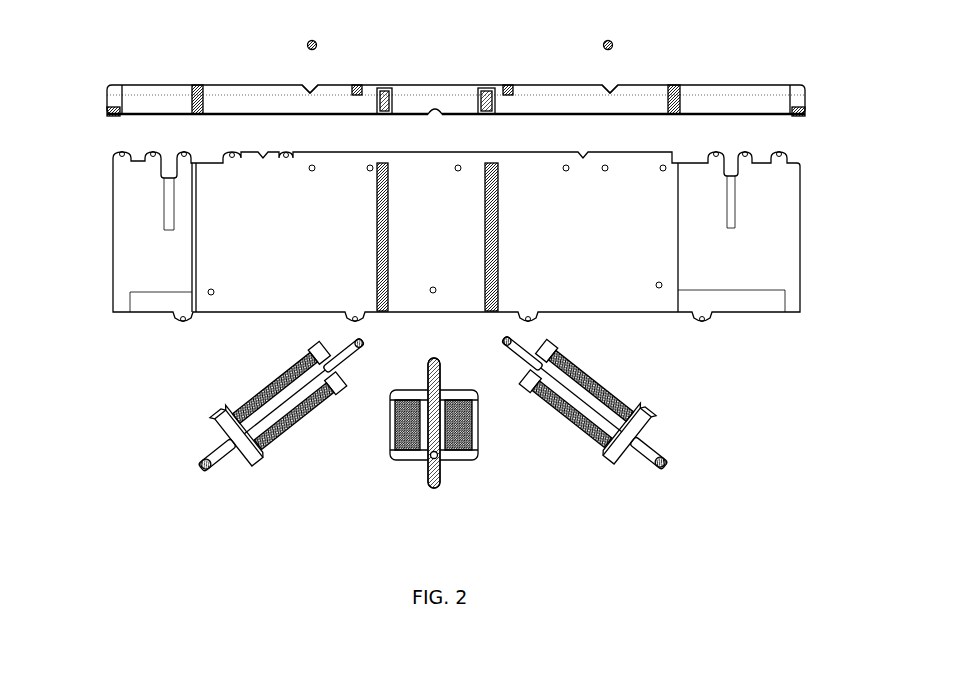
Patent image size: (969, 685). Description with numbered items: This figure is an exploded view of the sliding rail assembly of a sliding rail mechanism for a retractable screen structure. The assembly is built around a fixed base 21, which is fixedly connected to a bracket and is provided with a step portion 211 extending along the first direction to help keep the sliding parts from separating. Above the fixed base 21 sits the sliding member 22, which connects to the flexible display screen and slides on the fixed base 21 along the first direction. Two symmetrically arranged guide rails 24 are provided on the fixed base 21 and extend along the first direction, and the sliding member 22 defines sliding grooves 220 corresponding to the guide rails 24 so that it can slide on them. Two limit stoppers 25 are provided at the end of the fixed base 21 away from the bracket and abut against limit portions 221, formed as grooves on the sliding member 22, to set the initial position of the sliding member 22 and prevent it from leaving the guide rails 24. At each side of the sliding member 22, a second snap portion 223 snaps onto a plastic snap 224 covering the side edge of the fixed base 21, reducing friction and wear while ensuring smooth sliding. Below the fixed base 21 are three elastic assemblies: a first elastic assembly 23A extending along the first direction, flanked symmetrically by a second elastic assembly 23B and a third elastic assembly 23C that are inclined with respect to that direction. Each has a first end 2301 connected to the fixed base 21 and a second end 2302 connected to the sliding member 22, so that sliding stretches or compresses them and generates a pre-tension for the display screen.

The fixed base 21 is at (628, 295).
The step portion 211 is at (190, 248).
The sliding member 22 is at (720, 95).
The sliding groove 220 is at (490, 100).
The limit portion 221 is at (310, 88).
The second snap portion 223 is at (117, 100).
The plastic snap 224 is at (197, 100).
The guide rail 24 is at (377, 235).
The limit stopper 25 is at (312, 42).
The first elastic assembly 23A is at (400, 430).
The second elastic assembly 23B is at (300, 418).
The third elastic assembly 23C is at (583, 416).
The first end 2301 is at (205, 458).
The second end 2302 is at (350, 353).